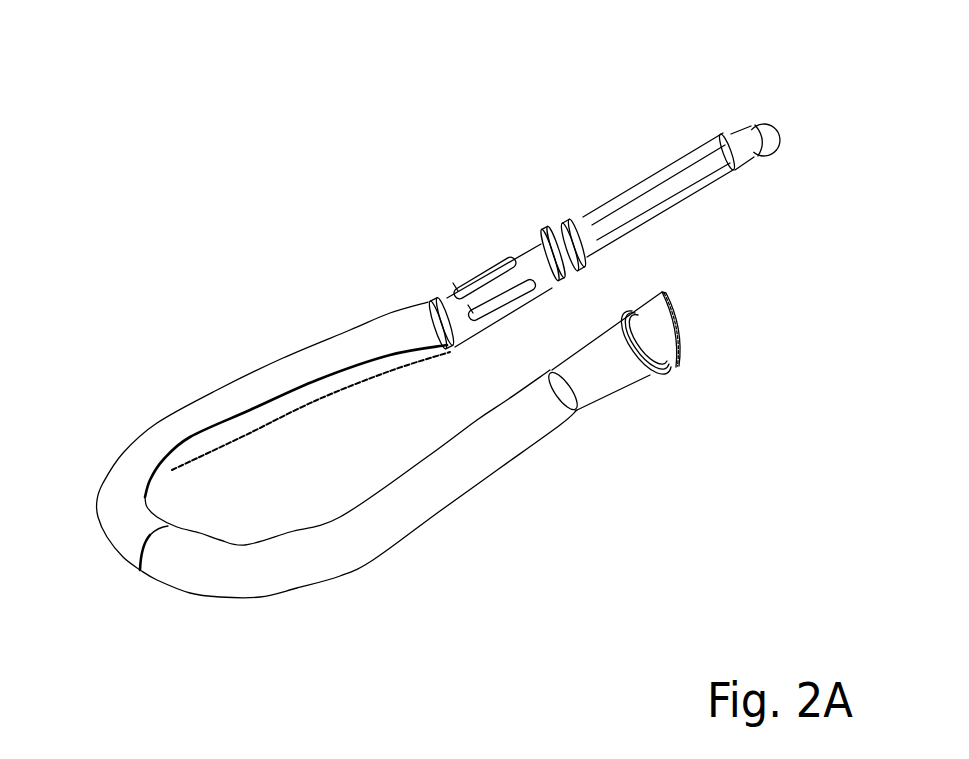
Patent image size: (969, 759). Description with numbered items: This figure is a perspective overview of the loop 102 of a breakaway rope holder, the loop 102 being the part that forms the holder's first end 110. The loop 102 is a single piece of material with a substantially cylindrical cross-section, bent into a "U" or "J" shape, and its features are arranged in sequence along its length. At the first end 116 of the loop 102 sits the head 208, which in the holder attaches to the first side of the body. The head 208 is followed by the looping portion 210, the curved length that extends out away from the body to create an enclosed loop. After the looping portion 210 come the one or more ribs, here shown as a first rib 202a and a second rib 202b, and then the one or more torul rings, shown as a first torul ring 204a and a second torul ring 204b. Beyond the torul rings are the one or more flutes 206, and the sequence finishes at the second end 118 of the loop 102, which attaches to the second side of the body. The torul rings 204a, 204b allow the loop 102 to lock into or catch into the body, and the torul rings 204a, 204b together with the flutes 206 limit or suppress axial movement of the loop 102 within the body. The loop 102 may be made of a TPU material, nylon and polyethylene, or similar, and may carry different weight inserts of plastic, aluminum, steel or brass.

The loop 102 is at (195, 216).
The first end 110 is at (133, 577).
The looping portion 210 is at (262, 563).
The first end 116 is at (618, 353).
The head 208 is at (672, 338).
The first rib 202a is at (493, 267).
The second rib 202b is at (523, 293).
The first torul ring 204a is at (583, 253).
The second torul ring 204b is at (543, 243).
The flutes 206 is at (637, 200).
The second end 118 is at (760, 110).